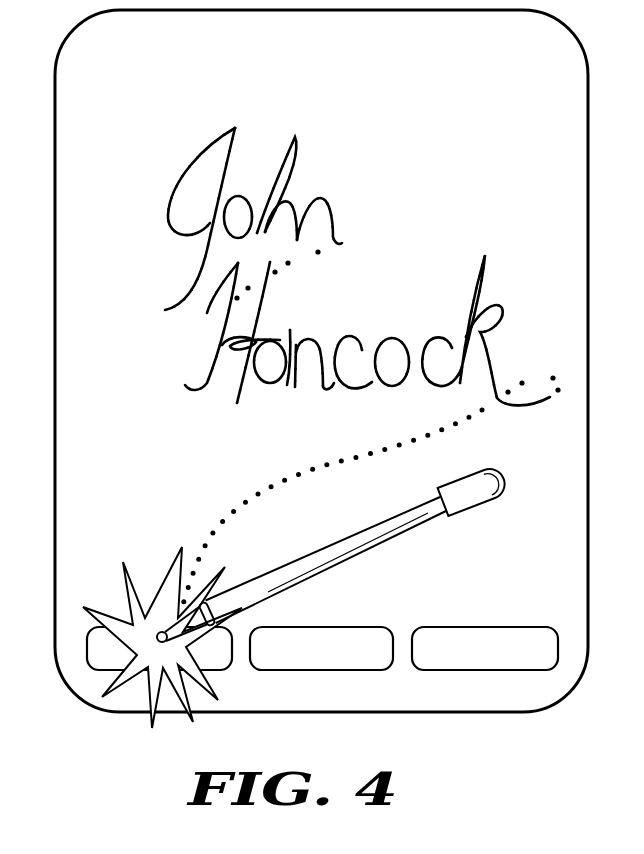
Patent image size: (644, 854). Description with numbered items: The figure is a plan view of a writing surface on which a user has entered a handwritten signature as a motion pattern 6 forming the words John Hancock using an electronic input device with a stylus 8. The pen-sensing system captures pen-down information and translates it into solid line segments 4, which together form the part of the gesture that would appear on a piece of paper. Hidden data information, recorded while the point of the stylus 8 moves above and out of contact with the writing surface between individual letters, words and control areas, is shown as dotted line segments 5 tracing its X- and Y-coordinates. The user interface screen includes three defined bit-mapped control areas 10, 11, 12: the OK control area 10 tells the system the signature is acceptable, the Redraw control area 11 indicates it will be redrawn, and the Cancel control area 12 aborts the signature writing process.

The line segments 4 is at (203, 152).
The dotted line segments 5 is at (303, 257).
The motion pattern 6 is at (256, 130).
The stylus 8 is at (305, 557).
The control area 10 is at (221, 662).
The control area 11 is at (354, 633).
The control area 12 is at (519, 632).